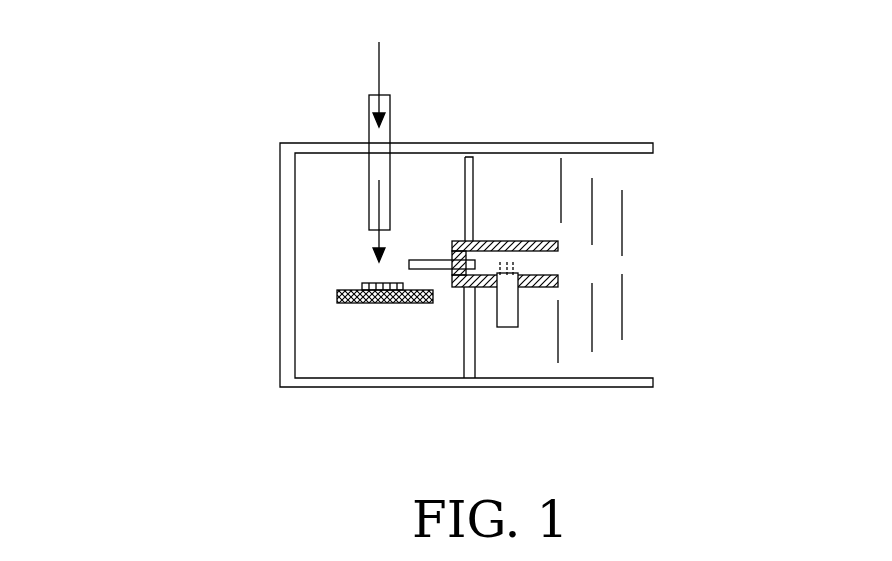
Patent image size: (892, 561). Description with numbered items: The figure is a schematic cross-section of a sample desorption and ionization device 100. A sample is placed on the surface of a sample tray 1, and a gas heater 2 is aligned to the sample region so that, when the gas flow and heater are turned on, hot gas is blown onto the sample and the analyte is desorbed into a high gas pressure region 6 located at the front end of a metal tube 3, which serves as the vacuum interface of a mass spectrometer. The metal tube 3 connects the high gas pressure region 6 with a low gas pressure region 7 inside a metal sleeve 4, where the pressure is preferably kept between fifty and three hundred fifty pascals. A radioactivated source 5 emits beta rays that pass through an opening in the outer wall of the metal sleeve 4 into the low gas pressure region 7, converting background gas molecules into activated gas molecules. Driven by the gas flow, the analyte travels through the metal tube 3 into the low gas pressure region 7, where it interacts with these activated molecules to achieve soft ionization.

The sample desorption and ionization device 100 is at (222, 78).
The sample tray 1 is at (378, 303).
The gas heater 2 is at (370, 128).
The metal tube 3 is at (438, 269).
The metal sleeve 4 is at (510, 241).
The radioactivated source 5 is at (518, 313).
The high gas pressure region 6 is at (320, 240).
The low gas pressure region 7 is at (548, 263).